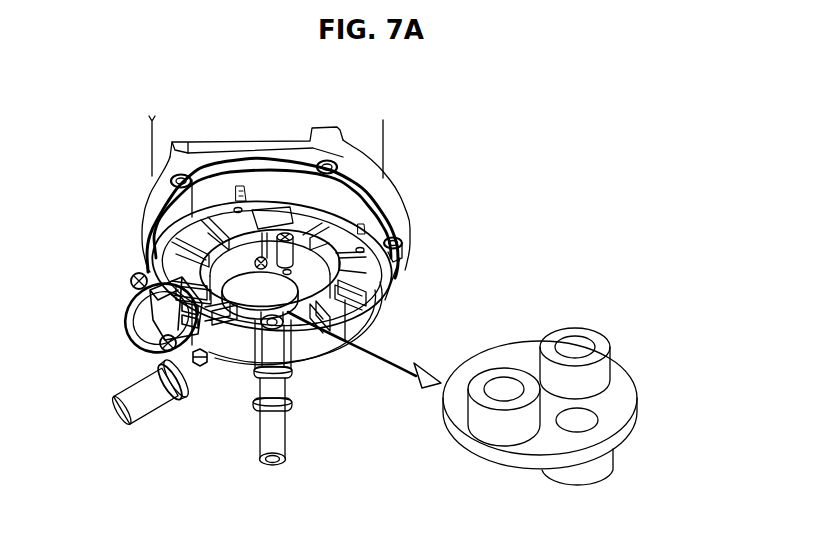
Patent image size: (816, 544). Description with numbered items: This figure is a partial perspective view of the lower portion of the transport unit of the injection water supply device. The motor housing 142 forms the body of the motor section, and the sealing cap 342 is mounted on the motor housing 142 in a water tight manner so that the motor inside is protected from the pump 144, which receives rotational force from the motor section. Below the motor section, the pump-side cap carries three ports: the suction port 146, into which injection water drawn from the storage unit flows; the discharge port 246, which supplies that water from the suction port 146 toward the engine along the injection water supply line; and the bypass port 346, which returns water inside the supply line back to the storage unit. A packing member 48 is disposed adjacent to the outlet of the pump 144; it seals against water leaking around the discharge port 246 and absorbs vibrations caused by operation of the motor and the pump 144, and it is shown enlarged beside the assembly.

The motor housing 142 is at (374, 163).
The sealing cap 342 is at (217, 156).
The pump 144 is at (250, 260).
The suction port 146 is at (390, 267).
The discharge port 246 is at (136, 389).
The bypass port 346 is at (263, 437).
The packing member 48 is at (239, 318).